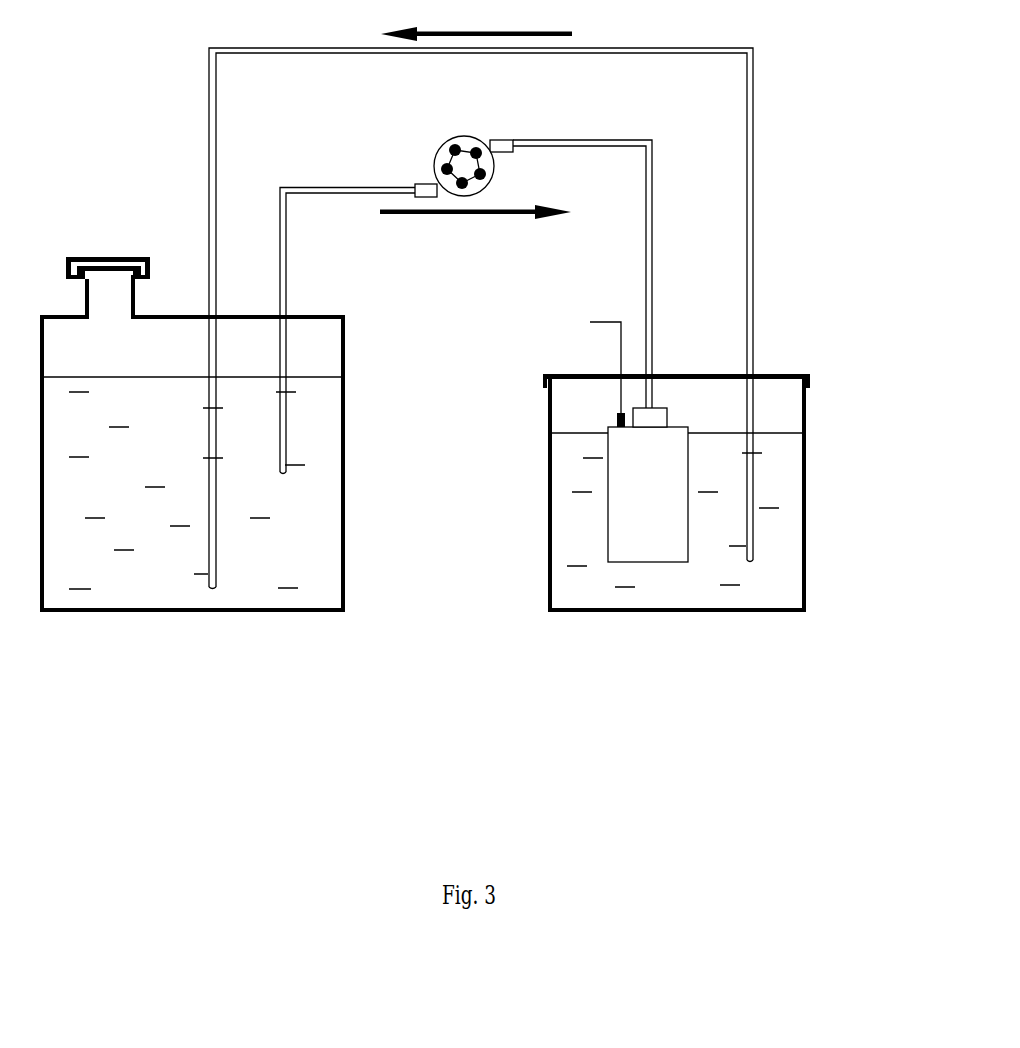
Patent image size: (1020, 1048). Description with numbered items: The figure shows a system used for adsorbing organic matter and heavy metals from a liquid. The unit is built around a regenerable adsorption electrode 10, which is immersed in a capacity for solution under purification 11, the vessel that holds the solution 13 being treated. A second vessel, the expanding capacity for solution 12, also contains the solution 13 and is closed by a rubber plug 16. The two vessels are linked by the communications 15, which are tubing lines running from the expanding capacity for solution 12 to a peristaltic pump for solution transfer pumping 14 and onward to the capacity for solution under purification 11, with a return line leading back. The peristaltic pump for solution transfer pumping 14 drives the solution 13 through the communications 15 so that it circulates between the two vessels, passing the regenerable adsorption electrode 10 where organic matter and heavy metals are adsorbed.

The regenerable adsorption electrode 10 is at (645, 488).
The capacity for solution under purification 11 is at (805, 415).
The expanding capacity for solution 12 is at (345, 410).
The solution 13 is at (322, 507).
The peristaltic pump for solution transfer pumping 14 is at (464, 143).
The communications 15 is at (750, 225).
The rubber plug 16 is at (97, 257).